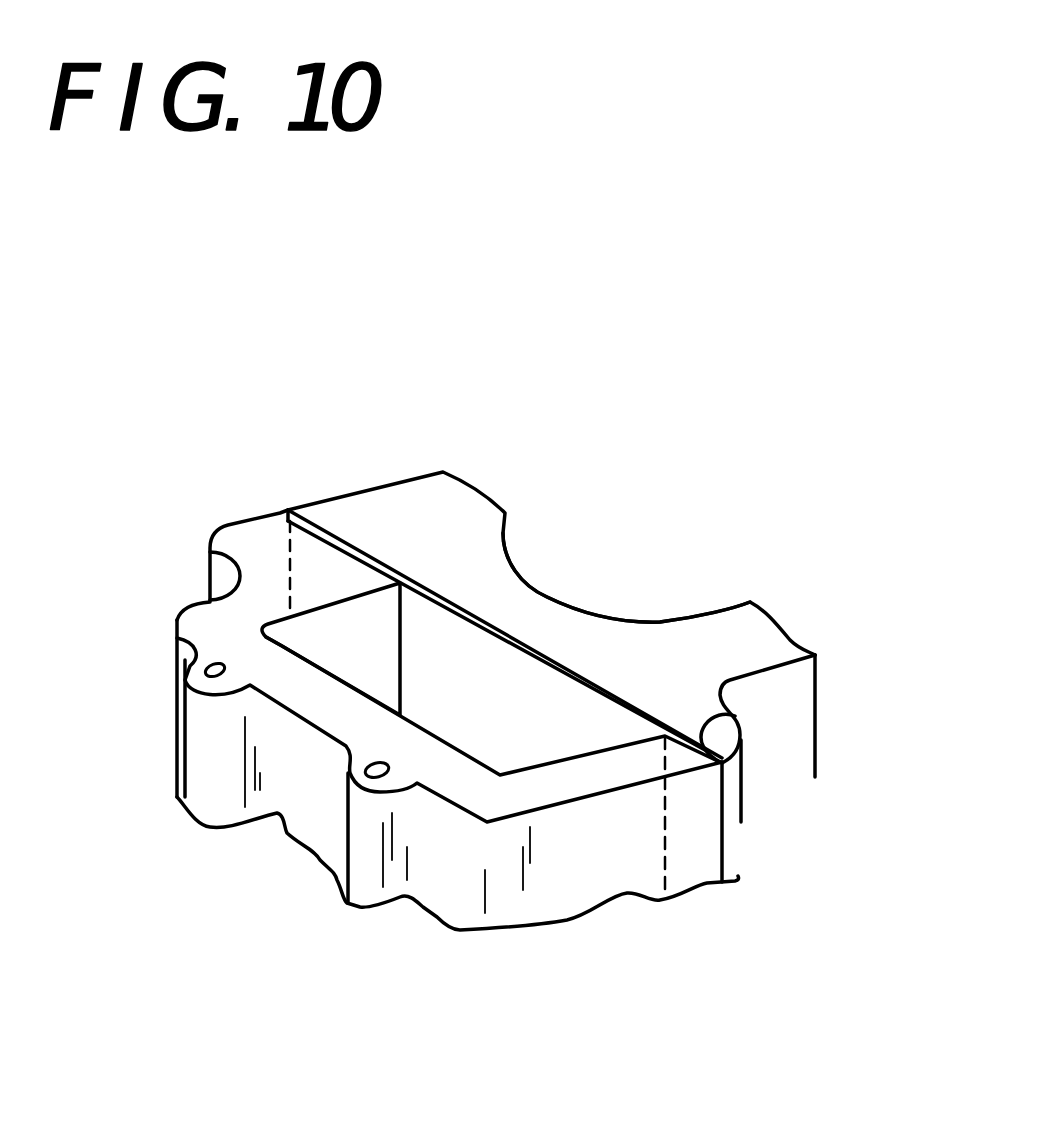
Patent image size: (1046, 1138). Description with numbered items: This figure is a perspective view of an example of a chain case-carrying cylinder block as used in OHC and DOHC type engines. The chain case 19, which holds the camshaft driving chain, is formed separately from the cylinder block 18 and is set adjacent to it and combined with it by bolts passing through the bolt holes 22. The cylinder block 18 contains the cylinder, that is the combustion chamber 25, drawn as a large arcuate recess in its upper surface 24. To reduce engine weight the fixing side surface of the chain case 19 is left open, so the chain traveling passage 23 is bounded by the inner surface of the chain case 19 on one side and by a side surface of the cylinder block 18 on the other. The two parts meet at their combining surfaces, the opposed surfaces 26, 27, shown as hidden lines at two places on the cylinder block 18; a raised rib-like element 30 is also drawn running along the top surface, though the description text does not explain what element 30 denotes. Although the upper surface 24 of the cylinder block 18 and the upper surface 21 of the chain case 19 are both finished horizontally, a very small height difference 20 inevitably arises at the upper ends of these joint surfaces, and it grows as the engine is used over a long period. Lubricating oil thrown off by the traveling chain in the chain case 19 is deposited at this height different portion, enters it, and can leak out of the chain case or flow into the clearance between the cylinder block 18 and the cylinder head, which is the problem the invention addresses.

The cylinder block 18 is at (747, 710).
The chain case 19 is at (312, 780).
The height difference 20 is at (733, 780).
The upper surface of the chain case 21 is at (527, 797).
The bolt holes 22 is at (205, 670).
The passage 23 is at (317, 642).
The upper surface of the cylinder block 24 is at (633, 657).
The combustion chamber 25 is at (547, 593).
The opposed surfaces 26 is at (428, 650).
The opposed surfaces 27 is at (687, 822).
The rib 30 is at (333, 542).